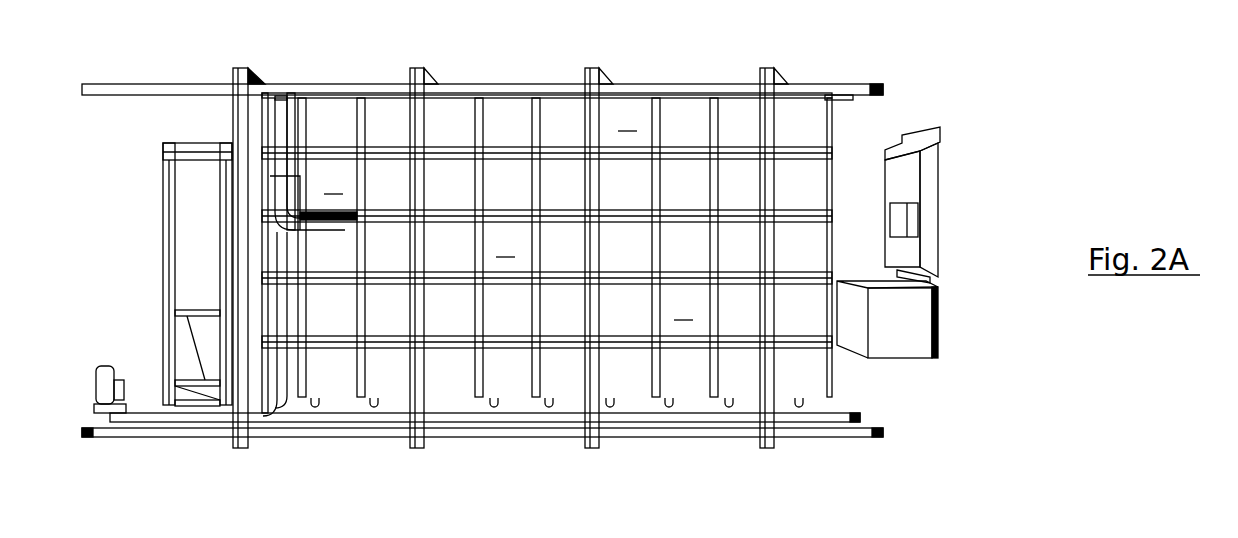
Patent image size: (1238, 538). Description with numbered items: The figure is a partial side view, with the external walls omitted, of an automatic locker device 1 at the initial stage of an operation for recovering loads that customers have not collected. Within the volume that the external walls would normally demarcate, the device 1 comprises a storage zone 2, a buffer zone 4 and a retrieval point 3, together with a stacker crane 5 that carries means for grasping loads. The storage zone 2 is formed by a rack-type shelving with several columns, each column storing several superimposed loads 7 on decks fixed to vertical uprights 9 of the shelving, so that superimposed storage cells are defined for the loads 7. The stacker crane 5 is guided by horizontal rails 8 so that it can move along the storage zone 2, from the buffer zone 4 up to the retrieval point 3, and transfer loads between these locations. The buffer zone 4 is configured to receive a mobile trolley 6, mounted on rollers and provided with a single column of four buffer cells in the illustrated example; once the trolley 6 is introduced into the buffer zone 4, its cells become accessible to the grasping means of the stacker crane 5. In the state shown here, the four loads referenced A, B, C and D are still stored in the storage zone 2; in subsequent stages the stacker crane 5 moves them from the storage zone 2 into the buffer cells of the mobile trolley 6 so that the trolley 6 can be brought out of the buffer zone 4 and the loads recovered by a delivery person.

The automatic locker device 1 is at (972, 129).
The storage zone 2 is at (818, 470).
The retrieval point 3 is at (960, 470).
The buffer zone 4 is at (247, 470).
The stacker crane 5 is at (292, 183).
The mobile trolley 6 is at (167, 306).
The loads 7 is at (565, 103).
The horizontal rails 8 is at (848, 86).
The vertical uprights 9 is at (600, 84).